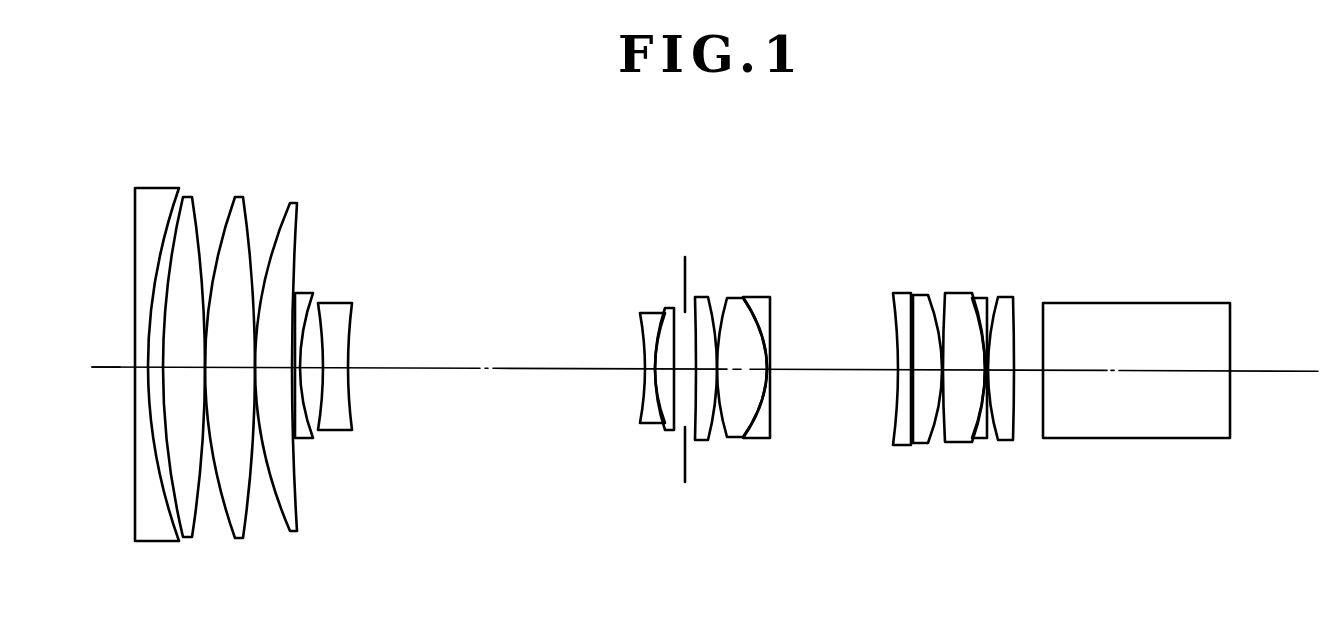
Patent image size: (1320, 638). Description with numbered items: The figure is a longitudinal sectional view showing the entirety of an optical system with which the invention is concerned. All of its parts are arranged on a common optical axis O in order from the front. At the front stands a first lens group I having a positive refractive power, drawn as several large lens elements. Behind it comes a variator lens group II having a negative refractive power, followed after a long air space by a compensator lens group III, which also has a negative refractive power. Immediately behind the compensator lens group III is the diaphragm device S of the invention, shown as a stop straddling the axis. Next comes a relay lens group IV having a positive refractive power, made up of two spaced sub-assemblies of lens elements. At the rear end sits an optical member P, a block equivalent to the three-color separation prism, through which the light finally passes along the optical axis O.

The optical axis O is at (108, 368).
The first lens group I is at (310, 547).
The variator lens group II is at (293, 450).
The compensator lens group III is at (637, 437).
The diaphragm device S is at (686, 277).
The relay lens group IV is at (688, 452).
The optical member P is at (1183, 438).